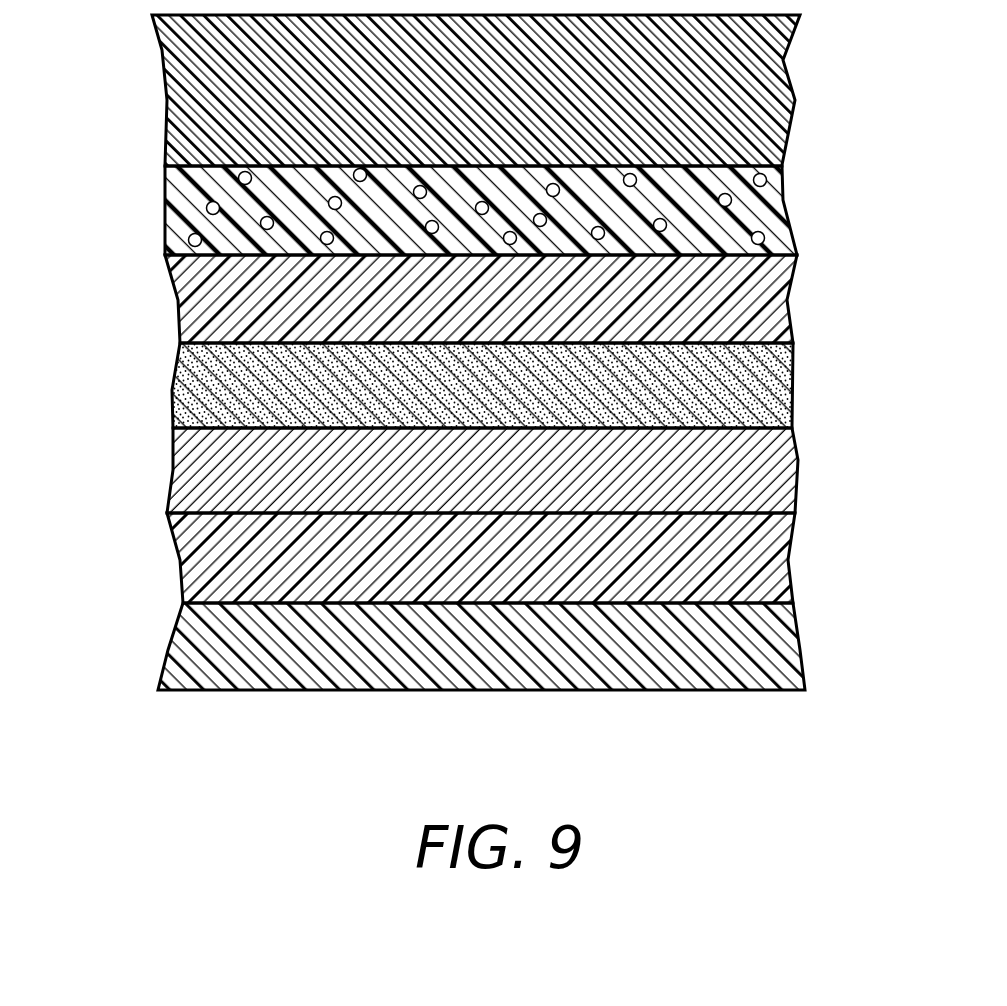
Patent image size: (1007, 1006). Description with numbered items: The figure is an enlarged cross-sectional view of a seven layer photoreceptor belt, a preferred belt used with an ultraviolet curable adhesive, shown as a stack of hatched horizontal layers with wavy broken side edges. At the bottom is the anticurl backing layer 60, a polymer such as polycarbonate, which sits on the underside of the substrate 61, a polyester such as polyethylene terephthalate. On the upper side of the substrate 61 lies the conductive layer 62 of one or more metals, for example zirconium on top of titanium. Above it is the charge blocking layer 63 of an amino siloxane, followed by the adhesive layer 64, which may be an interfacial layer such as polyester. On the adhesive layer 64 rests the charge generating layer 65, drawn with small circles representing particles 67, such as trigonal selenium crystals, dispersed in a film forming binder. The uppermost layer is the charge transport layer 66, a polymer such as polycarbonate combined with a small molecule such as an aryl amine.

The anticurl backing layer 60 is at (770, 655).
The substrate 61 is at (770, 567).
The conductive layer 62 is at (770, 480).
The charge blocking layer 63 is at (770, 393).
The adhesive layer 64 is at (770, 293).
The charge generating layer 65 is at (770, 212).
The charge transport layer 66 is at (770, 92).
The particles 67 is at (180, 232).